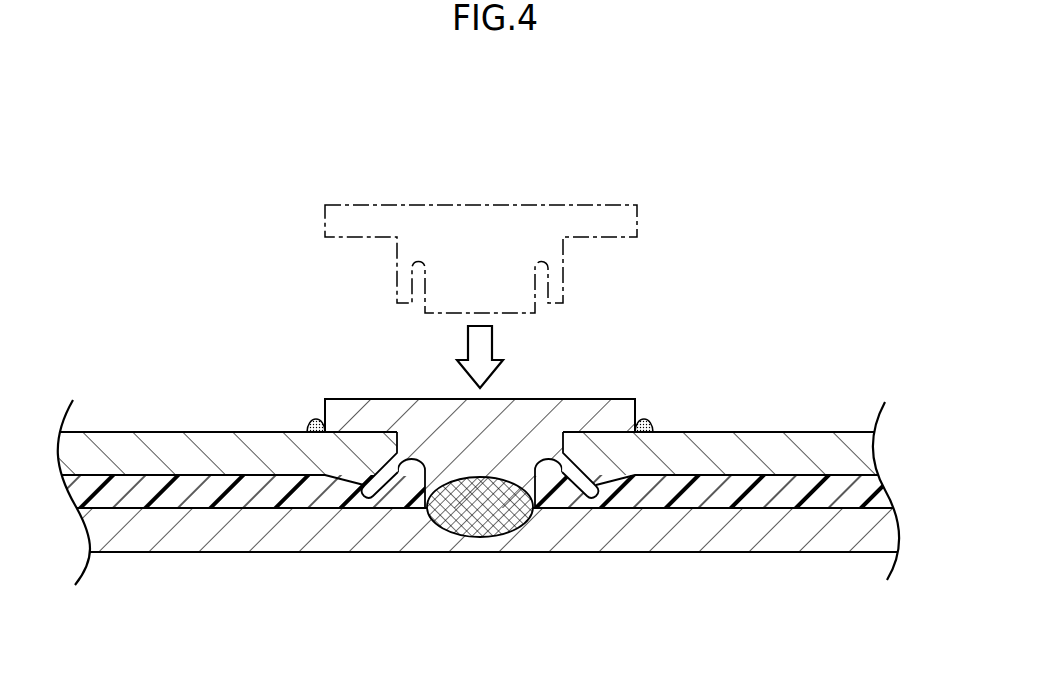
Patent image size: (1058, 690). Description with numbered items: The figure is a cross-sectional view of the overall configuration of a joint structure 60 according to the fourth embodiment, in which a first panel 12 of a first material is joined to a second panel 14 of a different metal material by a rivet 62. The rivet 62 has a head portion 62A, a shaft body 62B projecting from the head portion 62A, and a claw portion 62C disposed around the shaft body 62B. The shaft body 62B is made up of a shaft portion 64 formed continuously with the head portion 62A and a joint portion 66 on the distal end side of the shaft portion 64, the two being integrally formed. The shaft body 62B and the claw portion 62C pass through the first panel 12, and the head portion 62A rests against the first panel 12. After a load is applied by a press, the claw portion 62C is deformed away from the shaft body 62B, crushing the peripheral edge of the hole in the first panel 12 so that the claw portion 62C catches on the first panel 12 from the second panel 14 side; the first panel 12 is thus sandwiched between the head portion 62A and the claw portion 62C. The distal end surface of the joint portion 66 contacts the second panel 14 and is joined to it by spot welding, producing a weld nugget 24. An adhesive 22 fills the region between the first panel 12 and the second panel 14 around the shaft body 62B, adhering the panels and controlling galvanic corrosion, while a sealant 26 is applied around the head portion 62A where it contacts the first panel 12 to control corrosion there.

The first panel 12 is at (805, 430).
The second panel 14 is at (770, 553).
The adhesive 22 is at (190, 487).
The weld nugget 24 is at (480, 538).
The sealant 26 is at (313, 422).
The joint structure 60 is at (719, 337).
The rivet 62 is at (492, 388).
The head portion 62A is at (366, 406).
The shaft body 62B is at (531, 552).
The claw portion 62C is at (384, 484).
The shaft portion 64 is at (495, 458).
The joint portion 66 is at (497, 498).